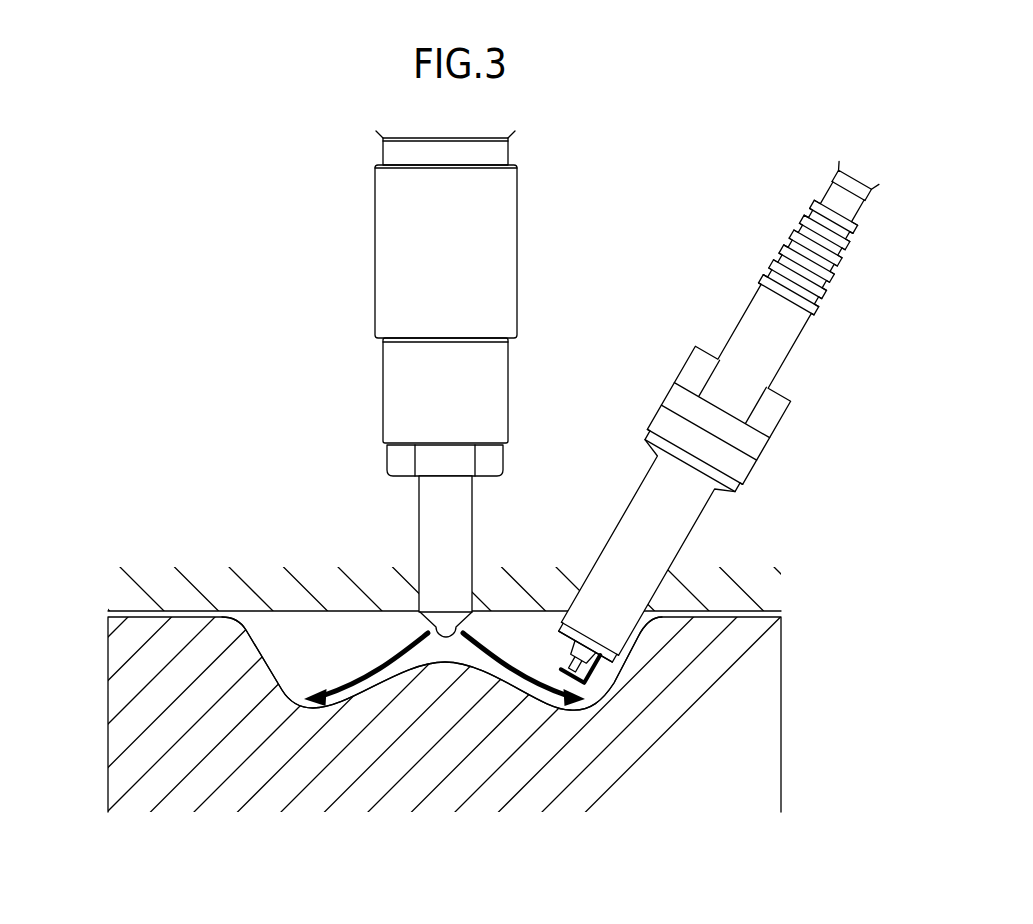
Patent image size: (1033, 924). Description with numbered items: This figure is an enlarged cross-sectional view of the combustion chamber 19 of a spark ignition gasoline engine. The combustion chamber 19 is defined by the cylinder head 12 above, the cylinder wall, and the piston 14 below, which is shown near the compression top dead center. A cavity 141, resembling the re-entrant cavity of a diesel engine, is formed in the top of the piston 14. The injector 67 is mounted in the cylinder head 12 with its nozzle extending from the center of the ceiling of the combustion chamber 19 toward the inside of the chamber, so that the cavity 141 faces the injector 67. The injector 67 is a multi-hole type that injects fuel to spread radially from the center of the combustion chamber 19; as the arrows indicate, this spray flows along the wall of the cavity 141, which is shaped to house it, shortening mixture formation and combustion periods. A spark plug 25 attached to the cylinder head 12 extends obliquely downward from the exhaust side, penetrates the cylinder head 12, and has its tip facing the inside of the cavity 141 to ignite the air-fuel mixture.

The cylinder head 12 is at (156, 617).
The piston 14 is at (762, 738).
The cavity 141 is at (254, 645).
The combustion chamber 19 is at (362, 640).
The spark plug 25 is at (684, 515).
The injector 67 is at (376, 259).